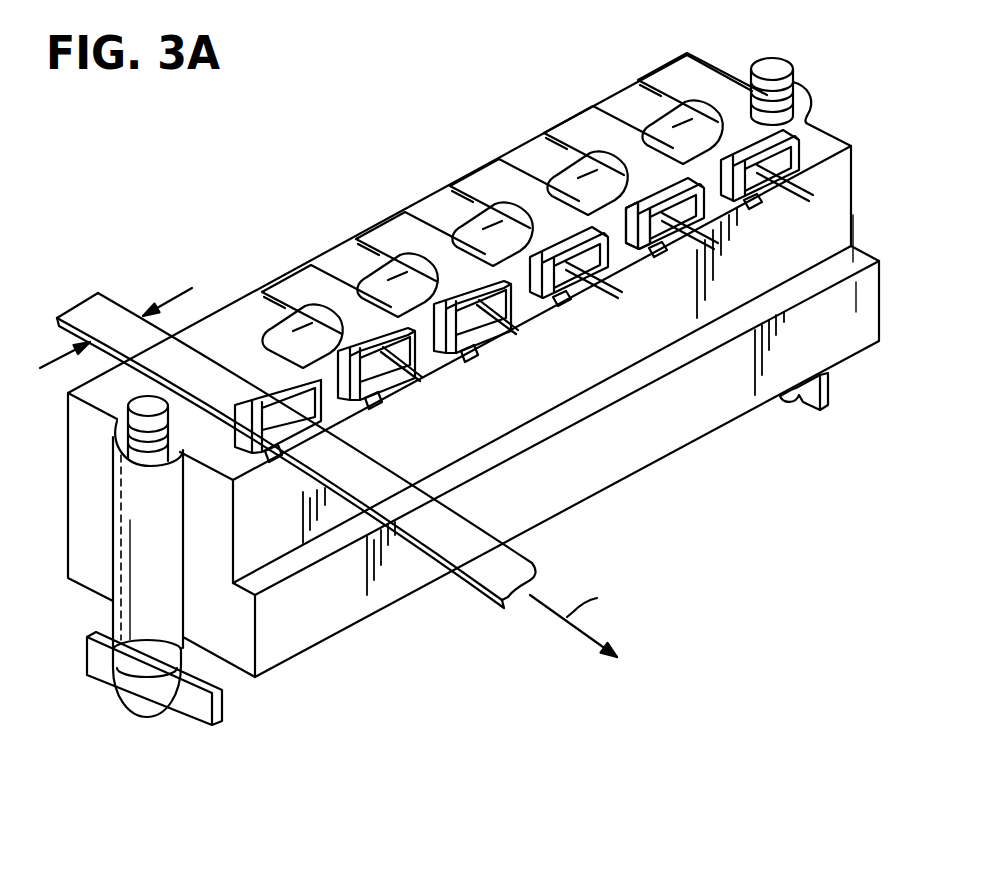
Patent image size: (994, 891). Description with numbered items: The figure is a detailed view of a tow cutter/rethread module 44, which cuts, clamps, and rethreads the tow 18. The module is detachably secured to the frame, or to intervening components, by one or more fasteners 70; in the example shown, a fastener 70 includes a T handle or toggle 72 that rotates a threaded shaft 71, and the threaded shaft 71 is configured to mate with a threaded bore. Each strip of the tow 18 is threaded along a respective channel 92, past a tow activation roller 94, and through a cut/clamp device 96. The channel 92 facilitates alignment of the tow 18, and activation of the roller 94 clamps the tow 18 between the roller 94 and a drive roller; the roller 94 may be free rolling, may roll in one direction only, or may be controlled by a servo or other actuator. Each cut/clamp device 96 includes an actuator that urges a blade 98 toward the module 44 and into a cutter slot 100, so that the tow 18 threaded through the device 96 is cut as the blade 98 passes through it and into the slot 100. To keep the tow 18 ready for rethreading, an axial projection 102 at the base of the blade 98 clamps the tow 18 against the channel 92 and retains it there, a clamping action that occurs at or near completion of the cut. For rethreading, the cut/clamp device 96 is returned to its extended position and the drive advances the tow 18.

The tow 18 is at (530, 564).
The tow cutter/rethread module 44 is at (398, 61).
The fastener 70 is at (147, 735).
The threaded shaft 71 is at (785, 63).
The T handle or toggle 72 is at (220, 706).
The channel 92 is at (332, 260).
The tow activation roller 94 is at (483, 197).
The cut/clamp device 96 is at (390, 333).
The blade 98 is at (587, 280).
The cutter slot 100 is at (567, 290).
The axial projection 102 is at (633, 197).